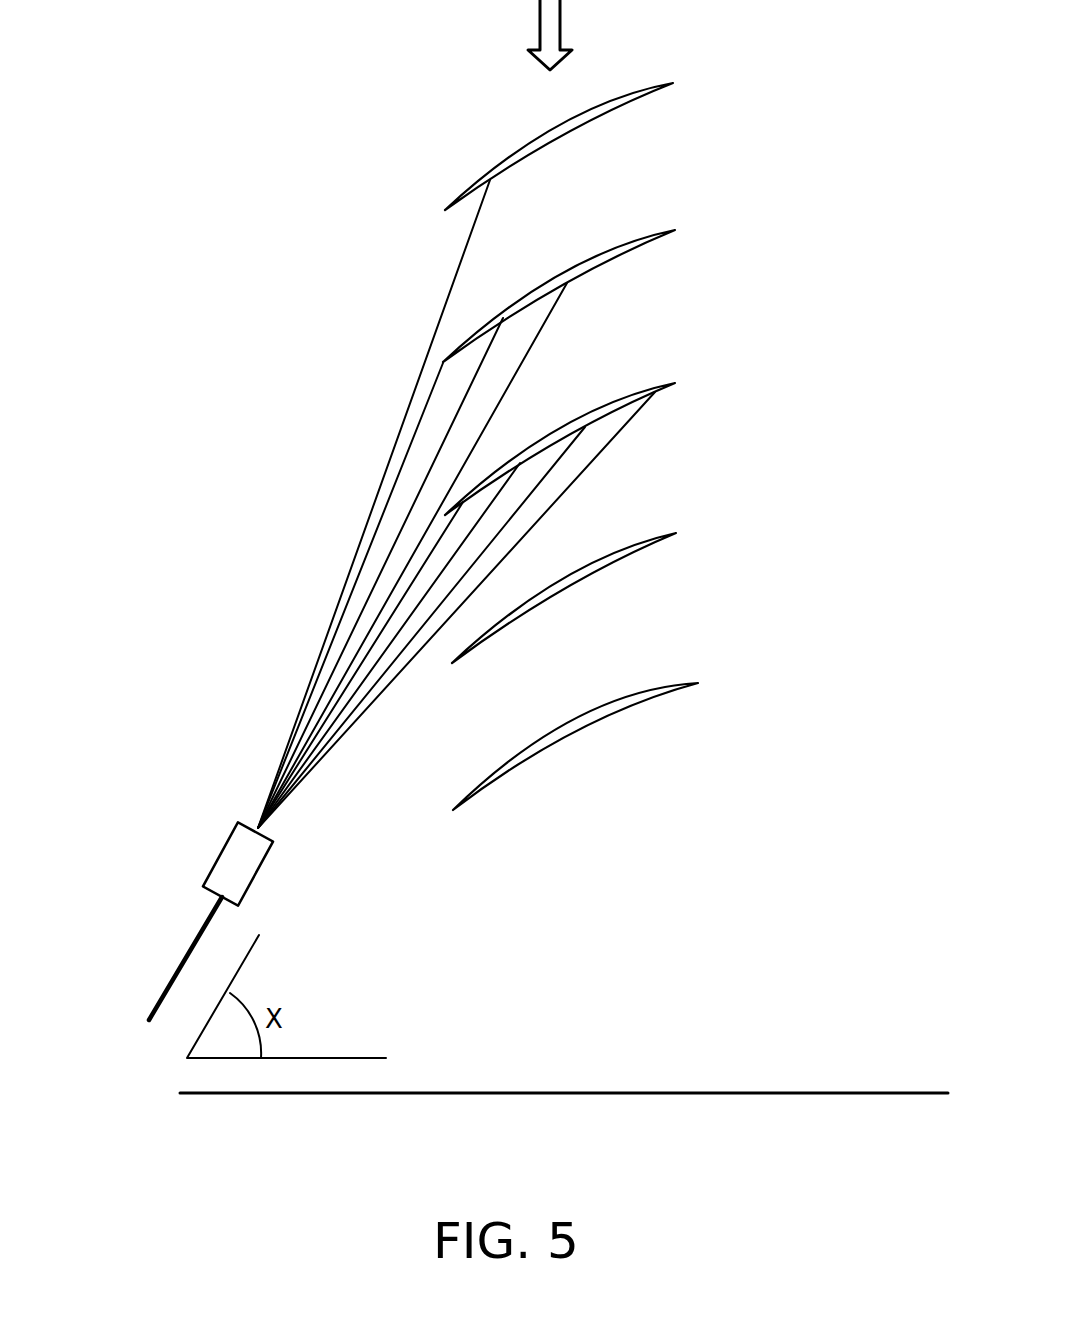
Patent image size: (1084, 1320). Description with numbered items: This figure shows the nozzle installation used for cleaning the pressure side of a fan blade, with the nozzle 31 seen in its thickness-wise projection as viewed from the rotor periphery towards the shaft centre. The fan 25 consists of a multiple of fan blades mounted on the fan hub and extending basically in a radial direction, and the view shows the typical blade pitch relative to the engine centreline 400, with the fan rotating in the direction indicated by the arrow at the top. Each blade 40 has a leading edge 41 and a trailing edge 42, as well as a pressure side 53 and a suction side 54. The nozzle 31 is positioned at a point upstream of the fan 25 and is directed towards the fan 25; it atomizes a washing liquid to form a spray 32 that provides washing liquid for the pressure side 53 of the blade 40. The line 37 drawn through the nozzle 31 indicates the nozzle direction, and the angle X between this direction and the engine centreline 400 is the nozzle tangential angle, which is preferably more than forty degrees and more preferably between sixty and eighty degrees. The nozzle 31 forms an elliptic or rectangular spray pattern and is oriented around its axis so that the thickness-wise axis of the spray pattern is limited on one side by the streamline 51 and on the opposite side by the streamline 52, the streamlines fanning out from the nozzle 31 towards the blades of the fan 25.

The fan 25 is at (668, 887).
The nozzle 31 is at (230, 862).
The spray 32 is at (312, 730).
The sensor axis line 37 is at (170, 978).
The blade 40 is at (560, 740).
The leading edge 41 is at (453, 810).
The trailing edge 42 is at (698, 683).
The streamline 51 is at (336, 608).
The streamline 52 is at (380, 697).
The pressure side 53 is at (612, 713).
The suction side 54 is at (563, 722).
The engine centreline 400 is at (790, 1093).